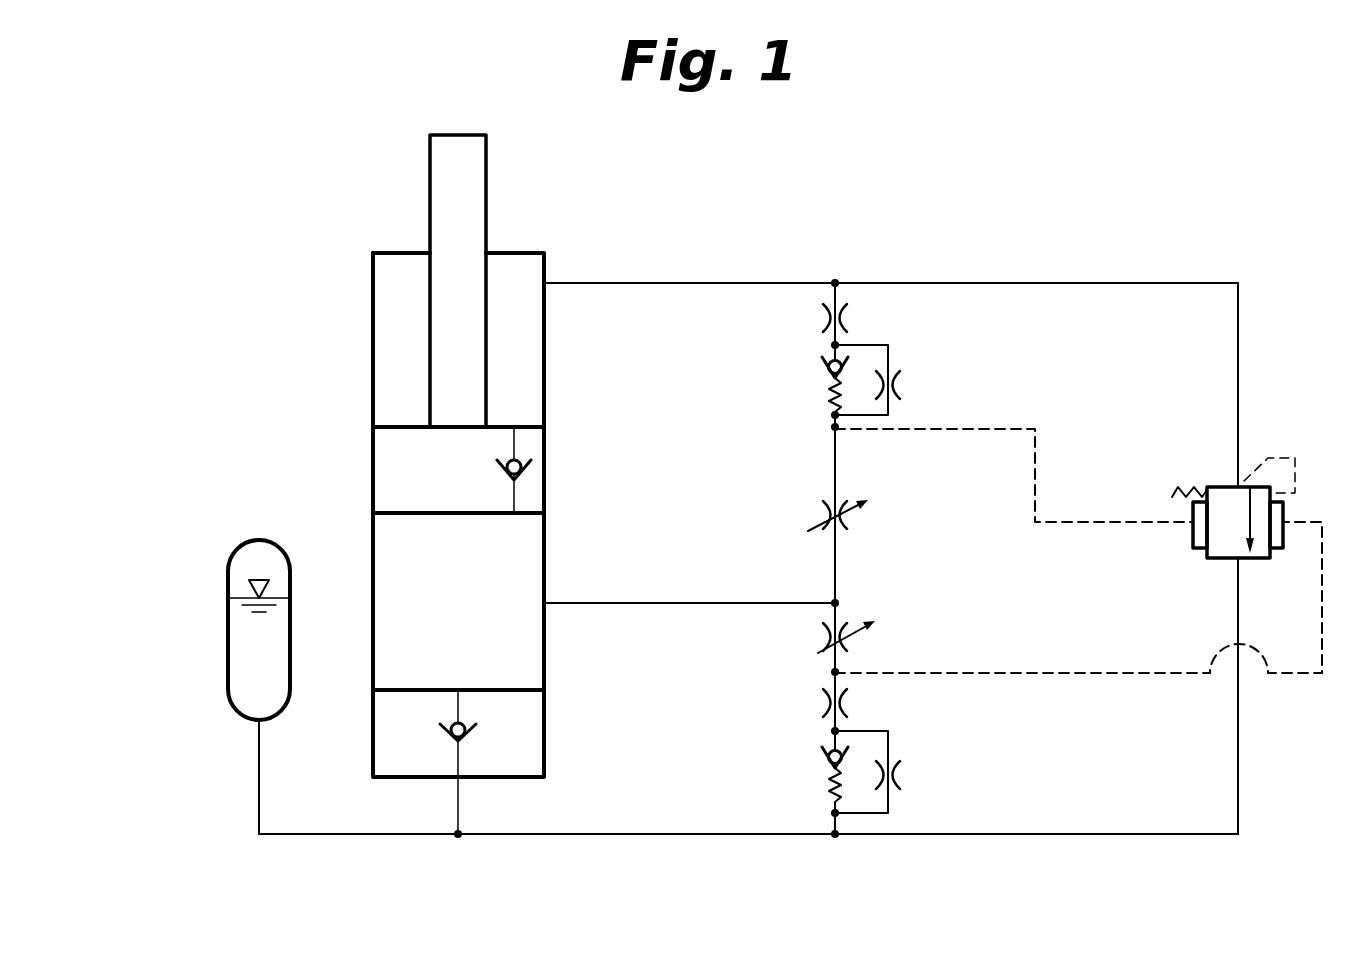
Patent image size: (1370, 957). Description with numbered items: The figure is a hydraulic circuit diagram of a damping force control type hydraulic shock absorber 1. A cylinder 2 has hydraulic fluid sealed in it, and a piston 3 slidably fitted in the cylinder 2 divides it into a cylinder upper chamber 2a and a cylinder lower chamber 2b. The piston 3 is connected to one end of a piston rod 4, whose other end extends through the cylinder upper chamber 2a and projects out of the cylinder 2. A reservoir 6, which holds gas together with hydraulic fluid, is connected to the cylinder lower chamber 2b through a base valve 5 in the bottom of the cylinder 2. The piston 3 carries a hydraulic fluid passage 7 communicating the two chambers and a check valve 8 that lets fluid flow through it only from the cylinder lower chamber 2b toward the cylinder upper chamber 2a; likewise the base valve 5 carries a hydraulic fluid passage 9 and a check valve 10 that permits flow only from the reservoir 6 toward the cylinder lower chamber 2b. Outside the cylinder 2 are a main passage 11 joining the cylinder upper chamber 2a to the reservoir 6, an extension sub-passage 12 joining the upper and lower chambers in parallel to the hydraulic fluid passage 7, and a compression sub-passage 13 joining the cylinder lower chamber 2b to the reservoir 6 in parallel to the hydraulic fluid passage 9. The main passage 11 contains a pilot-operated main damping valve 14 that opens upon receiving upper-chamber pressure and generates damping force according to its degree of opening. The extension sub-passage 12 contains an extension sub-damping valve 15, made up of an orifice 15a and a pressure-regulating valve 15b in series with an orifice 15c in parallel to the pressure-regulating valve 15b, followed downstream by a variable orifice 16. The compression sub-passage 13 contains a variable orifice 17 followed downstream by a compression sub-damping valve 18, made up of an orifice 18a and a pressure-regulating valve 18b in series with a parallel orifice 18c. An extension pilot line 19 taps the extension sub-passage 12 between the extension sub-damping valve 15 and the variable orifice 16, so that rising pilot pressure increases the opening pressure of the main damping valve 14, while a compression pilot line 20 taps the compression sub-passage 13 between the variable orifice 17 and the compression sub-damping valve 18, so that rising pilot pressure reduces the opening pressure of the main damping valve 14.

The damping force control type hydraulic shock absorber 1 is at (980, 191).
The cylinder 2 is at (372, 271).
The cylinder upper chamber 2a is at (384, 329).
The cylinder lower chamber 2b is at (385, 529).
The piston 3 is at (380, 457).
The piston rod 4 is at (480, 166).
The base valve 5 is at (528, 740).
The reservoir 6 is at (228, 568).
The hydraulic fluid passage 7 is at (514, 440).
The check valve 8 is at (527, 468).
The hydraulic fluid passage 9 is at (458, 703).
The check valve 10 is at (464, 737).
The main passage 11 is at (1240, 338).
The extension sub-passage 12 is at (834, 450).
The compression sub-passage 13 is at (833, 663).
The main damping valve 14 is at (1287, 508).
The extension sub-damping valve 15 is at (812, 357).
The orifice 15a is at (851, 318).
The pressure-regulating valve 15b is at (828, 372).
The orifice 15c is at (904, 387).
The variable orifice 16 is at (822, 513).
The variable orifice 17 is at (850, 642).
The compression sub-damping valve 18 is at (806, 776).
The orifice 18a is at (855, 704).
The pressure-regulating valve 18b is at (828, 754).
The orifice 18c is at (905, 777).
The extension pilot line 19 is at (1015, 425).
The compression pilot line 20 is at (1050, 672).